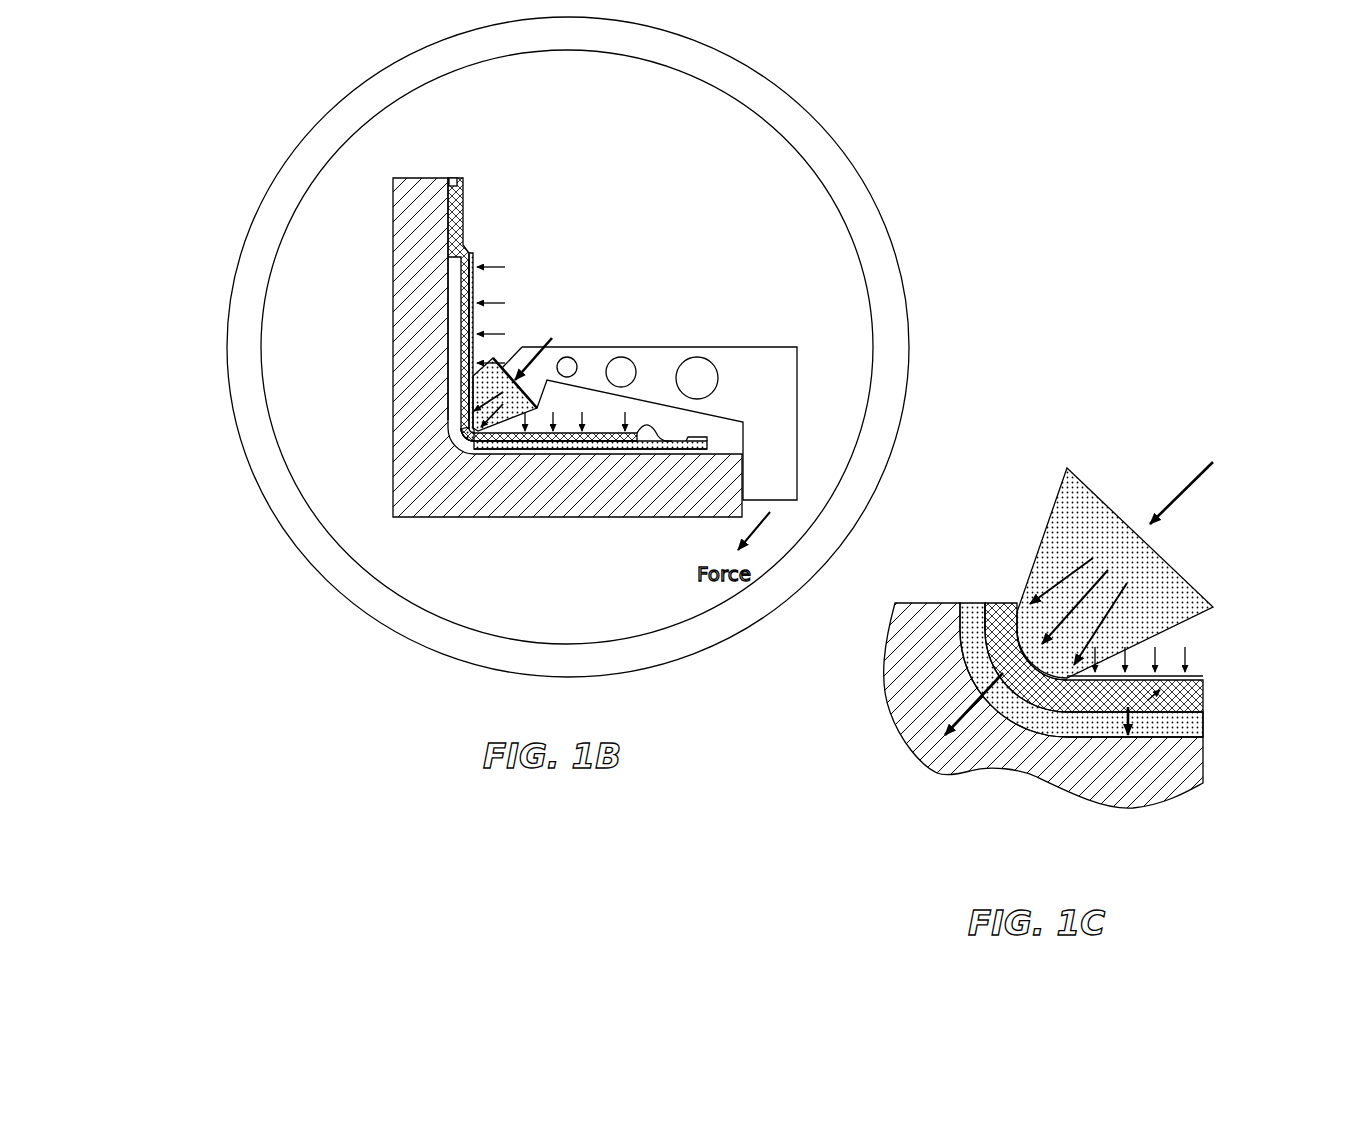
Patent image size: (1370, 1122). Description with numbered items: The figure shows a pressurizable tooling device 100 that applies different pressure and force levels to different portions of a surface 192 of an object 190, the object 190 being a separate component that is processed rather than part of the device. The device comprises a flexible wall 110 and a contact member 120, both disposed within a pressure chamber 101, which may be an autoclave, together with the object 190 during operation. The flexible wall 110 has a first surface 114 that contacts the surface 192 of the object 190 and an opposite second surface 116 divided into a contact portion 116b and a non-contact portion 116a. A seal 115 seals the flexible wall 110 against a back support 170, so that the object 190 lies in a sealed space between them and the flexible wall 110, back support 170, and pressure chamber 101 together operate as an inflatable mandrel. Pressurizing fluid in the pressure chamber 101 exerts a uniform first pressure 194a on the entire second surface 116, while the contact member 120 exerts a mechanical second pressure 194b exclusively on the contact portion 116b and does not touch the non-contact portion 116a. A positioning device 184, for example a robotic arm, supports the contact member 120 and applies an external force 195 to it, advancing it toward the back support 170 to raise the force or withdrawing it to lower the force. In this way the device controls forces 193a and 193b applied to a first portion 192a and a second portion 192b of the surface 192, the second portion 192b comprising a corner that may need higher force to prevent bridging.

In FIG. 1B, the pressurizable tooling device 100 is at (882, 129).
In FIG. 1B, the pressure chamber 101 is at (877, 238).
In FIG. 1B, the flexible wall 110 is at (478, 330).
In FIG. 1C, the flexible wall 110 is at (1205, 692).
In FIG. 1B, the first surface 114 is at (455, 340).
In FIG. 1B, the seal 115 is at (457, 178).
In FIG. 1B, the second surface 116 is at (468, 288).
In FIG. 1B, the non-contact portion 116a is at (477, 356).
In FIG. 1C, the non-contact portion 116a is at (1185, 645).
In FIG. 1B, the contact portion 116b is at (501, 444).
In FIG. 1C, the contact portion 116b is at (1035, 620).
In FIG. 1B, the contact member 120 is at (480, 392).
In FIG. 1C, the contact member 120 is at (1068, 468).
In FIG. 1B, the back support 170 is at (420, 470).
In FIG. 1C, the back support 170 is at (920, 694).
In FIG. 1B, the positioning device 184 is at (788, 375).
In FIG. 1B, the object 190 is at (588, 455).
In FIG. 1C, the object 190 is at (1205, 728).
In FIG. 1B, the surface 192 is at (622, 436).
In FIG. 1C, the surface 192 is at (1205, 735).
In FIG. 1C, the first portion 192a is at (1157, 715).
In FIG. 1C, the second portion 192b is at (985, 735).
In FIG. 1C, the force 193a is at (1128, 745).
In FIG. 1C, the force 193b is at (920, 765).
In FIG. 1B, the first pressure 194a is at (497, 264).
In FIG. 1C, the first pressure 194a is at (1175, 645).
In FIG. 1B, the second pressure 194b is at (510, 445).
In FIG. 1C, the second pressure 194b is at (1135, 570).
In FIG. 1B, the external force 195 is at (540, 362).
In FIG. 1C, the external force 195 is at (1187, 480).